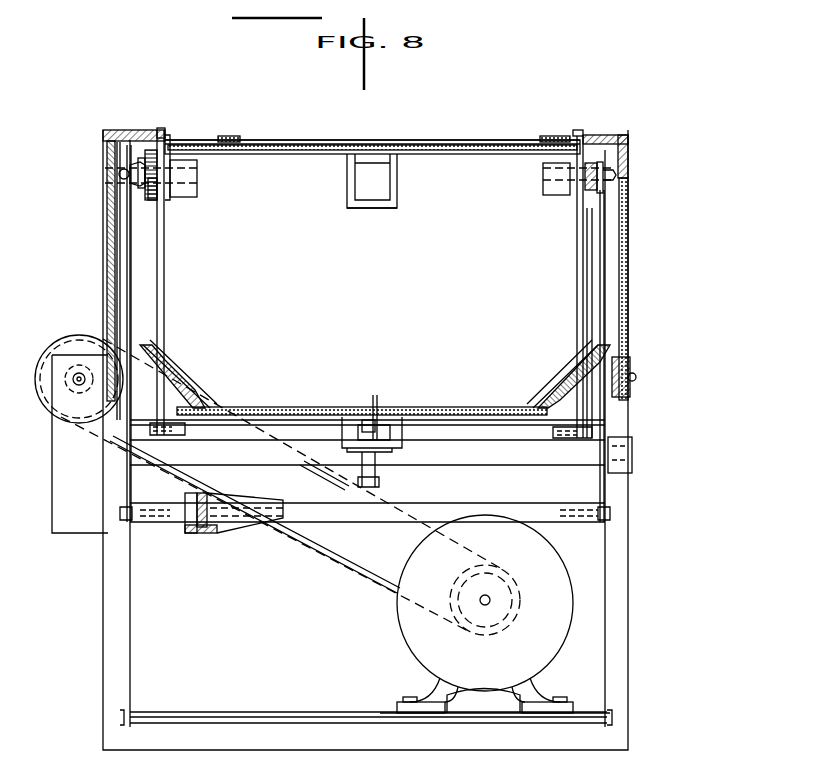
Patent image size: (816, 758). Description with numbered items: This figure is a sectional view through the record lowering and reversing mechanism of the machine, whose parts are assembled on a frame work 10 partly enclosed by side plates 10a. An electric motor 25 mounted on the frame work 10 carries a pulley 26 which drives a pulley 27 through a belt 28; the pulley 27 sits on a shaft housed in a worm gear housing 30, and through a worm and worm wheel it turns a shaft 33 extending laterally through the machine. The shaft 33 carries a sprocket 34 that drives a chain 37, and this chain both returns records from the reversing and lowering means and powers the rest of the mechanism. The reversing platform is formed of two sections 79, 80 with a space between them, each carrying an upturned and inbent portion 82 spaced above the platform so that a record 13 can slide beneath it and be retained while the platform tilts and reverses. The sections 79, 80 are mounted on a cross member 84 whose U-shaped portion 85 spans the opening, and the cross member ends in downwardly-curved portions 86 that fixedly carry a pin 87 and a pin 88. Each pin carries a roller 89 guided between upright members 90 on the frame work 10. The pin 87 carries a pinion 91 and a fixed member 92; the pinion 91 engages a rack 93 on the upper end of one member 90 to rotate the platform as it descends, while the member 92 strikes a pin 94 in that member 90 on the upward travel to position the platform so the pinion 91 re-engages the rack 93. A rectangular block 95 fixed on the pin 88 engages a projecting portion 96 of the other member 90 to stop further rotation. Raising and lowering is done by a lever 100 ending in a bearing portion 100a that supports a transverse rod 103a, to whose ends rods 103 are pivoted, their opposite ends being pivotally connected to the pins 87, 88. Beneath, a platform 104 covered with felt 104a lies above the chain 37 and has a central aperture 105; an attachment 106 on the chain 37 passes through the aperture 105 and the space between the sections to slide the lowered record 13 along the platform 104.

The frame work 10 is at (118, 665).
The side plates 10a is at (108, 255).
The record 13 is at (247, 144).
The electric motor 25 is at (428, 652).
The pulley 26 is at (517, 615).
The pulley 27 is at (45, 405).
The belt 28 is at (322, 560).
The worm gear housing 30 is at (72, 520).
The shaft 33 is at (510, 462).
The sprocket 34 is at (350, 470).
The chain 37 is at (379, 482).
The platform section 79 is at (426, 148).
The platform section 80 is at (292, 150).
The upturned and inbent portion 82 is at (225, 138).
The cross member 84 is at (455, 163).
The U-shaped portion 85 is at (385, 208).
The downwardly-curved portion 86 is at (197, 185).
The pin 87 is at (133, 170).
The pin 88 is at (616, 175).
The roller 89 is at (160, 190).
The upright member 90 is at (161, 280).
The pinion 91 is at (138, 180).
The member 92 is at (150, 152).
The rack 93 is at (155, 200).
The pin 94 is at (122, 178).
The rectangular block 95 is at (592, 162).
The projecting portion 96 is at (590, 245).
The lever 100 is at (207, 538).
The bearing portion 100a is at (260, 500).
The rod 103 is at (129, 278).
The rod 103a is at (433, 512).
The platform 104 is at (290, 407).
The felt 104a is at (250, 407).
The central aperture 105 is at (375, 398).
The attachment 106 is at (385, 420).